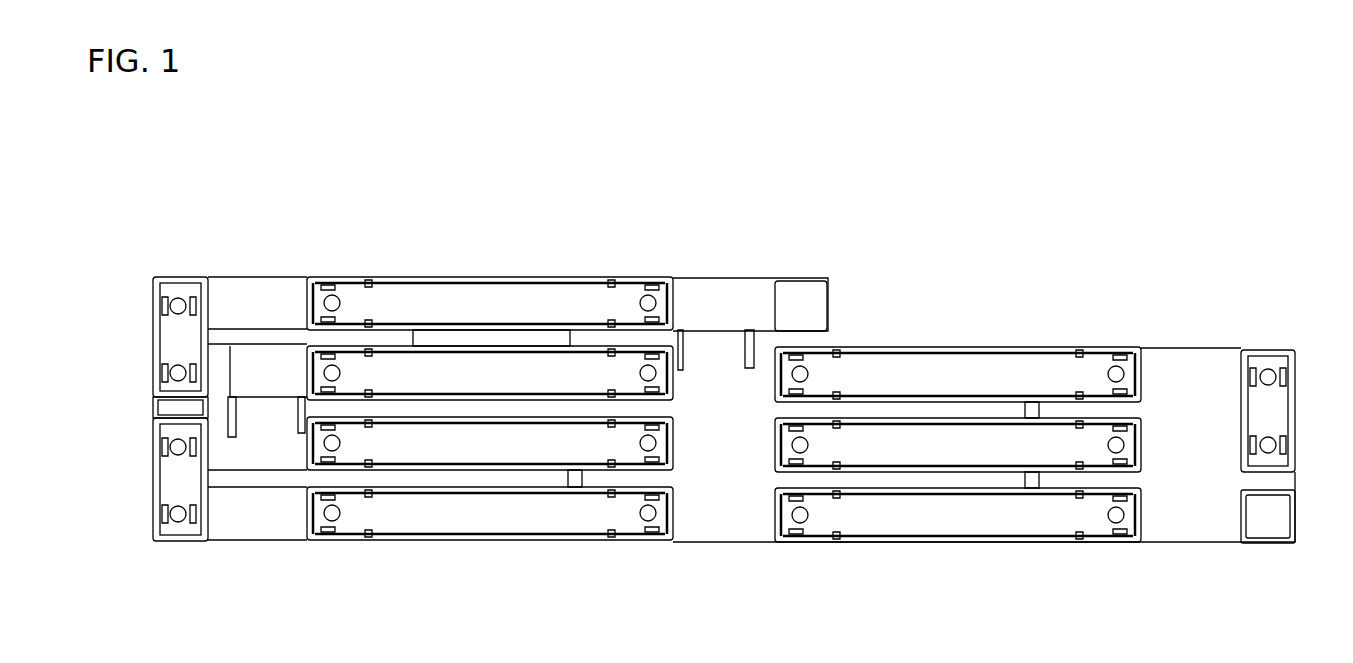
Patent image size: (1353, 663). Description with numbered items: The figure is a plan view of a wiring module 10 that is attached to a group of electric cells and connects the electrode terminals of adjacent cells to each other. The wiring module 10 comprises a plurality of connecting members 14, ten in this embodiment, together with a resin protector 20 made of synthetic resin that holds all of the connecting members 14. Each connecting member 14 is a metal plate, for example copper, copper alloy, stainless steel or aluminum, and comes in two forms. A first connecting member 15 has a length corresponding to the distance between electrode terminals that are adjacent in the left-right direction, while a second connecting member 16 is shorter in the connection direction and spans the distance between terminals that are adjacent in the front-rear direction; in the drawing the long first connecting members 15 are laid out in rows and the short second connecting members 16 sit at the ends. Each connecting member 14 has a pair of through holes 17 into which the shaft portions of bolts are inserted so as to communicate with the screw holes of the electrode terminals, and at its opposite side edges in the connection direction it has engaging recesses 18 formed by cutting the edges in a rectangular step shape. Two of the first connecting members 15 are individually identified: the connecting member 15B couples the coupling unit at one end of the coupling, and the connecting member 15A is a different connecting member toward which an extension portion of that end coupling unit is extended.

The wiring module 10 is at (963, 192).
The connecting member 14 is at (741, 405).
The first connecting member 15 is at (948, 515).
The connecting member 15A is at (512, 380).
The connecting member 15B is at (448, 298).
The second connecting member 16 is at (181, 290).
The through hole 17 is at (178, 512).
The engaging recess 18 is at (198, 306).
The resin protector 20 is at (1193, 525).